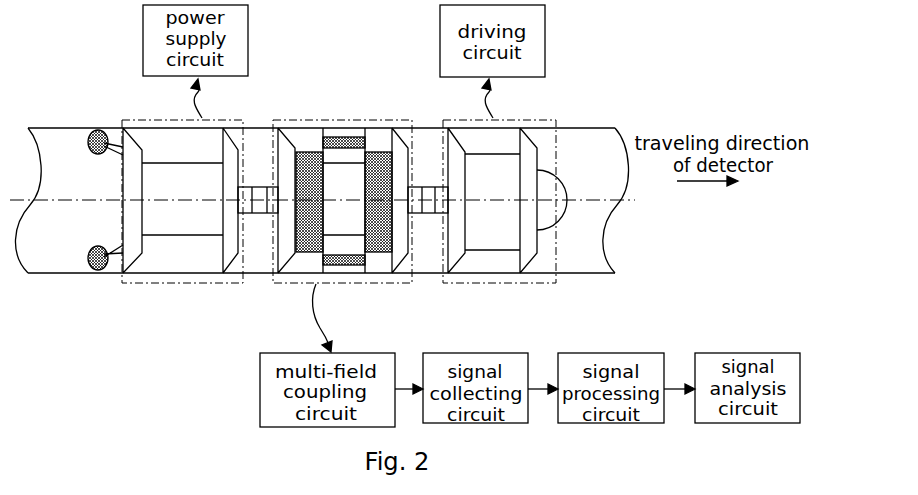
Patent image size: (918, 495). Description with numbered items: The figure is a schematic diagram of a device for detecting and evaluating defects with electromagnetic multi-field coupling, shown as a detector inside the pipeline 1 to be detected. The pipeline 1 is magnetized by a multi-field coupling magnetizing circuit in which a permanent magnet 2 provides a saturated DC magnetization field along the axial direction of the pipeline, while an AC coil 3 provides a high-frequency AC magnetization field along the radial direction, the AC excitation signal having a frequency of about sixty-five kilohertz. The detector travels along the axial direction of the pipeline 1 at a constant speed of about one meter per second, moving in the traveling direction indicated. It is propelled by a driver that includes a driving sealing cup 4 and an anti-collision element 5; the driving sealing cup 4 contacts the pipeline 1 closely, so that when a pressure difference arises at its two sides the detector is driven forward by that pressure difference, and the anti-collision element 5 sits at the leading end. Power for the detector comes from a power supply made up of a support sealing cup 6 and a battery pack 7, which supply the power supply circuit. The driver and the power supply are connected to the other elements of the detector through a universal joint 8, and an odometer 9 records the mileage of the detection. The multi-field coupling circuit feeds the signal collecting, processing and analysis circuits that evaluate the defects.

The pipeline 1 is at (600, 126).
The permanent magnet 2 is at (383, 155).
The AC coil 3 is at (340, 145).
The driving sealing cup 4 is at (525, 268).
The anti-collision element 5 is at (553, 222).
The support sealing cup 6 is at (187, 230).
The battery pack 7 is at (168, 237).
The universal joint 8 is at (255, 215).
The odometer 9 is at (97, 133).